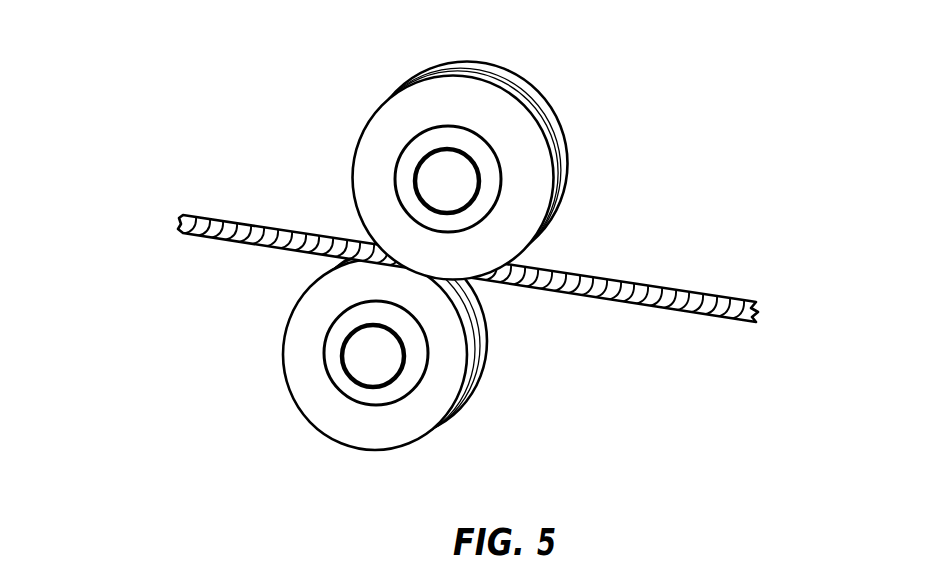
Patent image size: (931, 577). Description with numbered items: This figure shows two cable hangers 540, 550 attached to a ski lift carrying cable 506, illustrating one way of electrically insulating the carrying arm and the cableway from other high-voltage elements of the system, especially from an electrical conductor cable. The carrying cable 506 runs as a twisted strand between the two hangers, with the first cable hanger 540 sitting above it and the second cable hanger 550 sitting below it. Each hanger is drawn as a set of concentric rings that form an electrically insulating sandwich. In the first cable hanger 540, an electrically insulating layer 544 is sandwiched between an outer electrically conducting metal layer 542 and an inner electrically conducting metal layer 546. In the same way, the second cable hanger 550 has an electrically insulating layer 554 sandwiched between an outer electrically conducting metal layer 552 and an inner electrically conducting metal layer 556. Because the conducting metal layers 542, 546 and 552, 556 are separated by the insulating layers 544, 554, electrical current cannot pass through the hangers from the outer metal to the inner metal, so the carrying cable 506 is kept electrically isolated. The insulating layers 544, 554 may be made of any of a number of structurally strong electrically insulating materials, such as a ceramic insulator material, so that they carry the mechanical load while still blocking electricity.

The ski lift carrying cable 506 is at (210, 235).
The cable hanger 540 is at (457, 146).
The electrically conducting metal layer 542 is at (502, 115).
The electrically insulating layer 544 is at (493, 180).
The electrically conducting metal layer 546 is at (457, 195).
The cable hanger 550 is at (368, 365).
The electrically conducting metal layer 552 is at (442, 328).
The electrically insulating layer 554 is at (417, 363).
The electrically conducting metal layer 556 is at (382, 372).